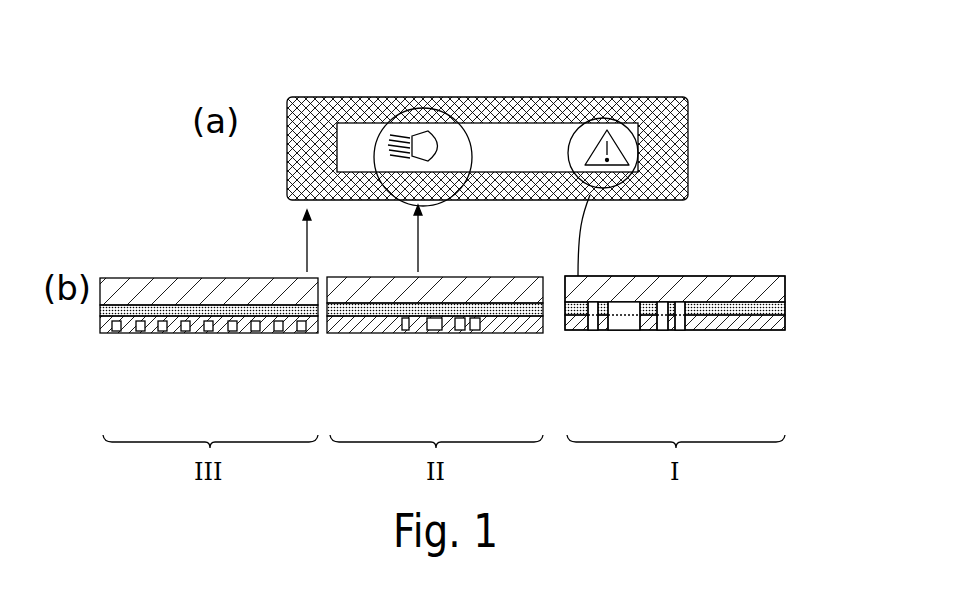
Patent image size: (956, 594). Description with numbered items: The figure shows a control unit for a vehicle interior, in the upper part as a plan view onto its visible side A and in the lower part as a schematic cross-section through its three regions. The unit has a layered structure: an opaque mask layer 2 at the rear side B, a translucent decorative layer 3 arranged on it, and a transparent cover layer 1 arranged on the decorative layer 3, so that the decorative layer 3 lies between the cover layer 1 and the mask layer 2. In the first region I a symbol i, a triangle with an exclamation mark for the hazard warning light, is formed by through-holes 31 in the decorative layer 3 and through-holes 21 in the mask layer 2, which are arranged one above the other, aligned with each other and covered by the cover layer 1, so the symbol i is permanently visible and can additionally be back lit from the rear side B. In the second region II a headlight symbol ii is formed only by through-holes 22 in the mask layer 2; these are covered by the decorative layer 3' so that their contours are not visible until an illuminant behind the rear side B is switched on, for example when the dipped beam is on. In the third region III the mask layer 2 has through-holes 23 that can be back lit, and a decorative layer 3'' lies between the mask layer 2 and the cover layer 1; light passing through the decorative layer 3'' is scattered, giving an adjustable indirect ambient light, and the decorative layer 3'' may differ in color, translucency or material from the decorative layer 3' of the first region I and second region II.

The cover layer 1 is at (785, 290).
The mask layer 2 is at (785, 325).
The decorative layer 3 is at (715, 285).
The decorative layer 3' is at (556, 263).
The decorative layer 3'' is at (173, 326).
The through-holes 21 is at (722, 405).
The through-holes 22 is at (500, 405).
The through-holes 23 is at (120, 333).
The through-holes 31 is at (674, 300).
The visible side A is at (688, 158).
The rear side B is at (733, 333).
The first region I is at (603, 118).
The second region II is at (432, 112).
The third region III is at (287, 157).
The symbol i is at (628, 124).
The symbol ii is at (446, 127).